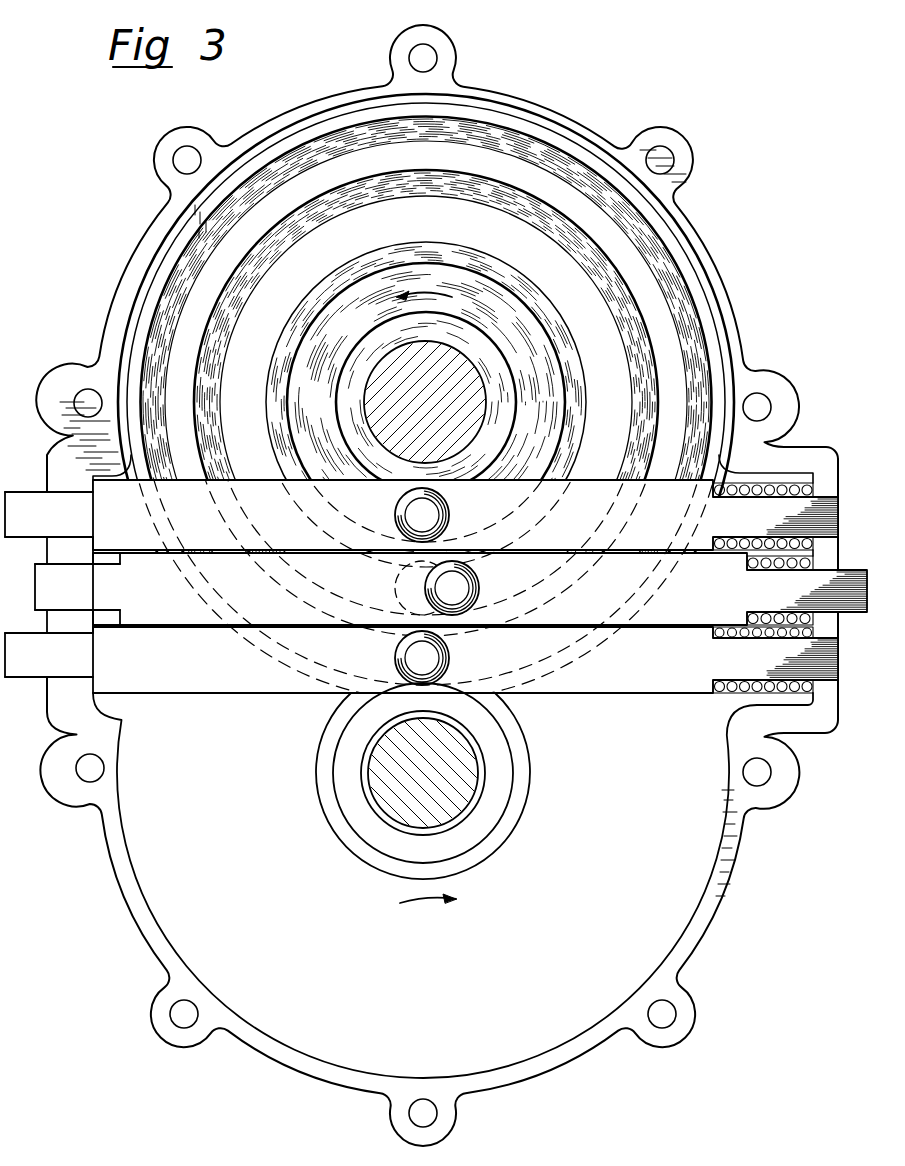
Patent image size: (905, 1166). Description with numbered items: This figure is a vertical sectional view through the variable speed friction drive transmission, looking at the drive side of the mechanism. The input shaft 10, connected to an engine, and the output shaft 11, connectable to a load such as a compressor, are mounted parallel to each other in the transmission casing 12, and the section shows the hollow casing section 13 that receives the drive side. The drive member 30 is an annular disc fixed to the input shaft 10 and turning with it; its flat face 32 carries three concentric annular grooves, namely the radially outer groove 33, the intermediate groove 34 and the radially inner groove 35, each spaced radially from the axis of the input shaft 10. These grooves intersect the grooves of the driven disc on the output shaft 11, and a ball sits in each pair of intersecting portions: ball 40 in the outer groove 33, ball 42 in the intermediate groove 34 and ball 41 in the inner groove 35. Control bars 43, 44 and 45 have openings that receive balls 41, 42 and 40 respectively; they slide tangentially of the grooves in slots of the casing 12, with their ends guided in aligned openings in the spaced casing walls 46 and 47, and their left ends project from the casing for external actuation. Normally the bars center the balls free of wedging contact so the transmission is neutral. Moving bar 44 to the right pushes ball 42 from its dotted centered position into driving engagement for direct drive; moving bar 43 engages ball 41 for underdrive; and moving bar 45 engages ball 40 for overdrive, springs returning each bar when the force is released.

The input shaft 10 is at (455, 373).
The output shaft 11 is at (467, 780).
The transmission casing 12 is at (551, 93).
The casing section 13 is at (560, 113).
The drive member 30 is at (570, 137).
The flat face 32 is at (648, 221).
The radially outer groove 33 is at (637, 252).
The intermediate groove 34 is at (588, 302).
The radially inner groove 35 is at (535, 350).
The ball 40 is at (440, 651).
The ball 41 is at (437, 503).
The ball 42 is at (467, 578).
The control bar 43 is at (657, 522).
The control bar 44 is at (614, 591).
The control bar 45 is at (642, 669).
The casing wall 46 is at (57, 470).
The casing wall 47 is at (830, 478).